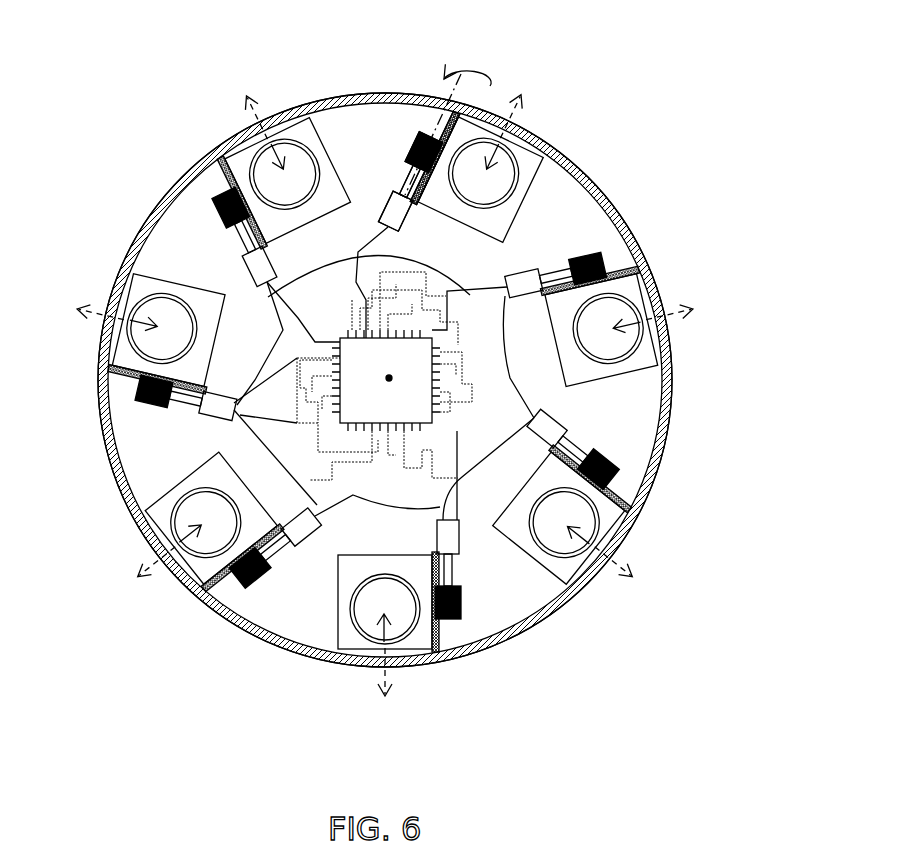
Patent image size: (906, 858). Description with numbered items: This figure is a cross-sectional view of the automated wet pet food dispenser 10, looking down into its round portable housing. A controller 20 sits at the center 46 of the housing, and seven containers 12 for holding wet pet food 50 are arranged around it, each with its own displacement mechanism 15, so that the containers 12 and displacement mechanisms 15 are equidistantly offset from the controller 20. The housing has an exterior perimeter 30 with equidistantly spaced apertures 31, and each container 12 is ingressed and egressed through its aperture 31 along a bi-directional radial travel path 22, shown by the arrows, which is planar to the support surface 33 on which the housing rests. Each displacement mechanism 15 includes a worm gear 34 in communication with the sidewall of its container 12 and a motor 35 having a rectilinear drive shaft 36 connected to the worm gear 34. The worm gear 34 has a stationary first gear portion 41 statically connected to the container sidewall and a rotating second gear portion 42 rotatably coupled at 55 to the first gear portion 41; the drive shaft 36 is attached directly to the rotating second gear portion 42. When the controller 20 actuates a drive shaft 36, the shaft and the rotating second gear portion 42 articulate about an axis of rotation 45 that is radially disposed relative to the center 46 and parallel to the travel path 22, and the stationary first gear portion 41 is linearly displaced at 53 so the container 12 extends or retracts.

The automated wet pet food dispenser 10 is at (178, 92).
The container 12 is at (645, 292).
The displacement mechanism 15 is at (395, 160).
The controller 20 is at (394, 409).
The bi-directional radial travel path 22 is at (272, 144).
The exterior perimeter 30 is at (160, 210).
The aperture 31 is at (290, 118).
The support surface 33 is at (192, 262).
The worm gear 34 is at (617, 228).
The motor 35 is at (472, 292).
The rectilinear drive shaft 36 is at (525, 278).
The stationary first gear portion 41 is at (633, 275).
The rotating second gear portion 42 is at (606, 265).
The axis of rotation 45 is at (466, 60).
The center of the portable housing 46 is at (392, 379).
The wet pet food 50 is at (634, 305).
The linear displacement of the stationary first gear portion 53 is at (466, 134).
The rotatable coupling 55 is at (437, 145).